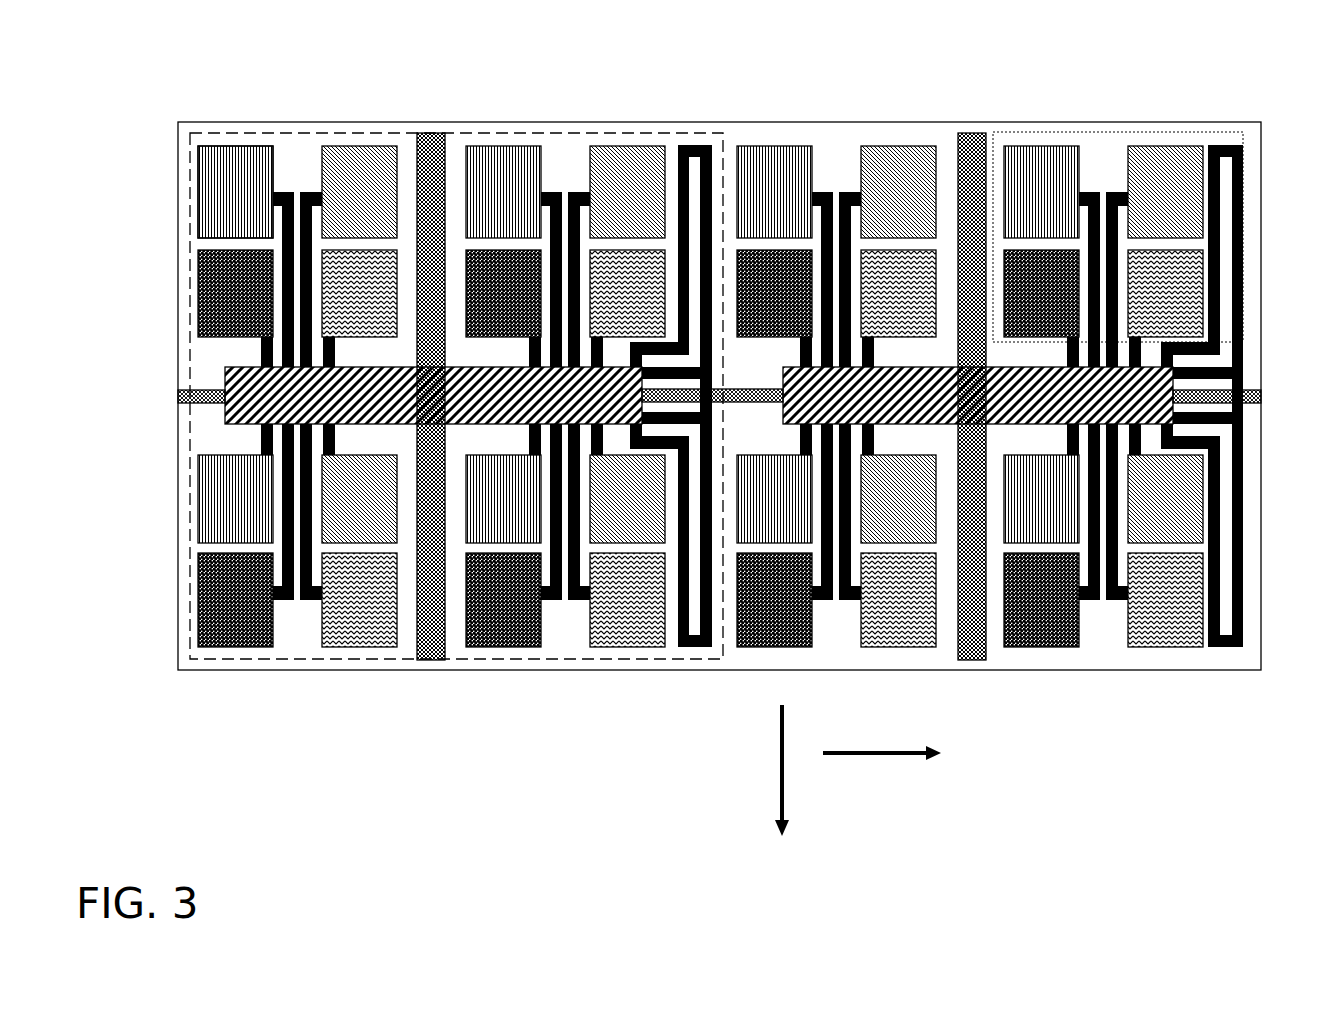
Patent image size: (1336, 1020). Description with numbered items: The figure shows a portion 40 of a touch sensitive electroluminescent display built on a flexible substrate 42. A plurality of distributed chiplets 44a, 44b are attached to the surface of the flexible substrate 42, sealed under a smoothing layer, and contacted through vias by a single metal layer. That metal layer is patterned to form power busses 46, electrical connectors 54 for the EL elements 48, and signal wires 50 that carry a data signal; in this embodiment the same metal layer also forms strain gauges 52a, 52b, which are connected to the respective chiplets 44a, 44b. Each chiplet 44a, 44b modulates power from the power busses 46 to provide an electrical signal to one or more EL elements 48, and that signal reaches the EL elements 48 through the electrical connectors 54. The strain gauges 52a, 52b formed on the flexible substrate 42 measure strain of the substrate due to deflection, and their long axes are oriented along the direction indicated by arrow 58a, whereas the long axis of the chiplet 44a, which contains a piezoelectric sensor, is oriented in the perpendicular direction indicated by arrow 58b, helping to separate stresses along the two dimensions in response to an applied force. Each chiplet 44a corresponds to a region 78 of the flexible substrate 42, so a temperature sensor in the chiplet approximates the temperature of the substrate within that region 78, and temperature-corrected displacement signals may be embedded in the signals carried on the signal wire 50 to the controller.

The portion of touch sensitive EL display 40 is at (483, 108).
The flexible substrate 42 is at (537, 122).
The chiplet 44a is at (225, 375).
The chiplet 44b is at (1190, 388).
The power bus 46 is at (422, 138).
The EL element 48 is at (245, 170).
The signal wire 50 is at (178, 389).
The strain gauge 52a is at (698, 147).
The strain gauge 52b is at (1232, 147).
The electrical connector 54 is at (286, 198).
The arrow 58a is at (777, 775).
The arrow 58b is at (898, 750).
The region 78 is at (598, 133).